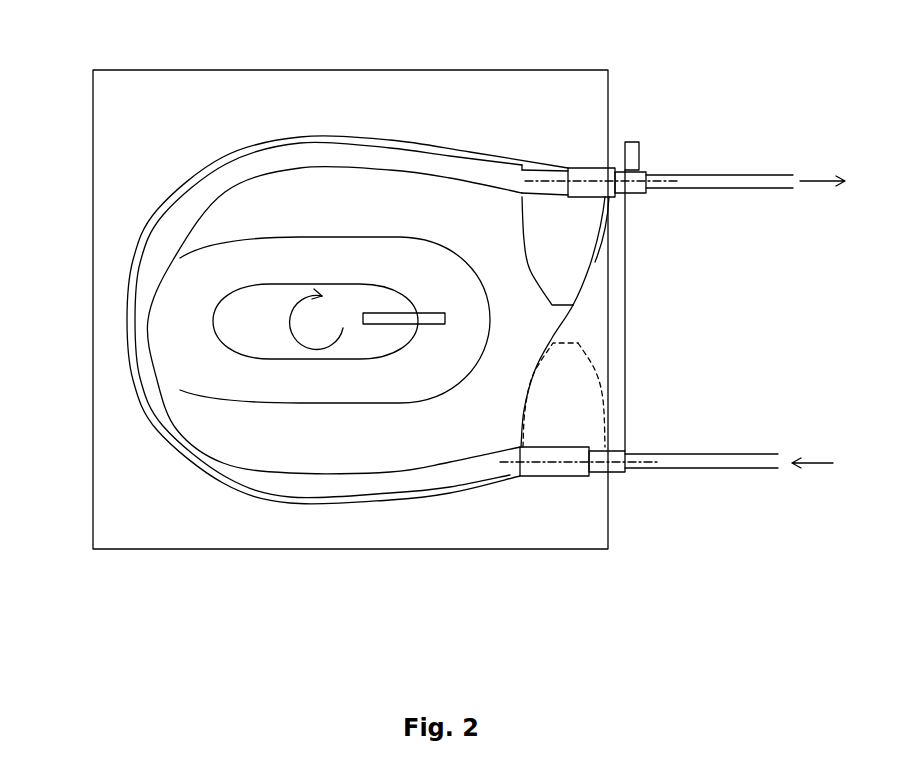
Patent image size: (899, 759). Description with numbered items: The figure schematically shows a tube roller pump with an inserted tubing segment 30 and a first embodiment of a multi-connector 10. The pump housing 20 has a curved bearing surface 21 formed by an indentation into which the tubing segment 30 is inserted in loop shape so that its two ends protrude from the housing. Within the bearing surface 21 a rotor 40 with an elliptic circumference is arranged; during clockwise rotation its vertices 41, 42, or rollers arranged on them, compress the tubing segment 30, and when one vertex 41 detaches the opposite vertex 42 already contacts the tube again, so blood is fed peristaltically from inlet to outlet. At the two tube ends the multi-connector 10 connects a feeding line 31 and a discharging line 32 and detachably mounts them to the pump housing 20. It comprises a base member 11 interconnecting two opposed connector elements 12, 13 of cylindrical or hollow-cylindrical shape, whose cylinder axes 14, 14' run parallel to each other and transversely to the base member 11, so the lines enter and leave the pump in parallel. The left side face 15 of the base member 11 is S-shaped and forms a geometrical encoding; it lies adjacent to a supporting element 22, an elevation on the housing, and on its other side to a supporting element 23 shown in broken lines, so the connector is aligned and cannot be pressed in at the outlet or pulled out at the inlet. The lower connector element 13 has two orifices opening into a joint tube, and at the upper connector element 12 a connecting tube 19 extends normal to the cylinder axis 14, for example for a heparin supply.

The multi-connector 10 is at (667, 300).
The base member 11 is at (622, 395).
The connector element 12 is at (595, 178).
The connector element 13 is at (560, 467).
The cylinder axis 14 is at (659, 150).
The cylinder axis 14' is at (633, 490).
The side face 15 is at (518, 423).
The connecting tube 19 is at (630, 142).
The pump housing 20 is at (431, 81).
The bearing surface 21 is at (147, 223).
The supporting element 22 is at (537, 248).
The supporting element 23 is at (578, 364).
The tubing segment 30 is at (252, 165).
The feeding line 31 is at (762, 465).
The discharging line 32 is at (728, 181).
The rotor 40 is at (275, 345).
The vertex 41 is at (148, 322).
The vertex 42 is at (487, 321).